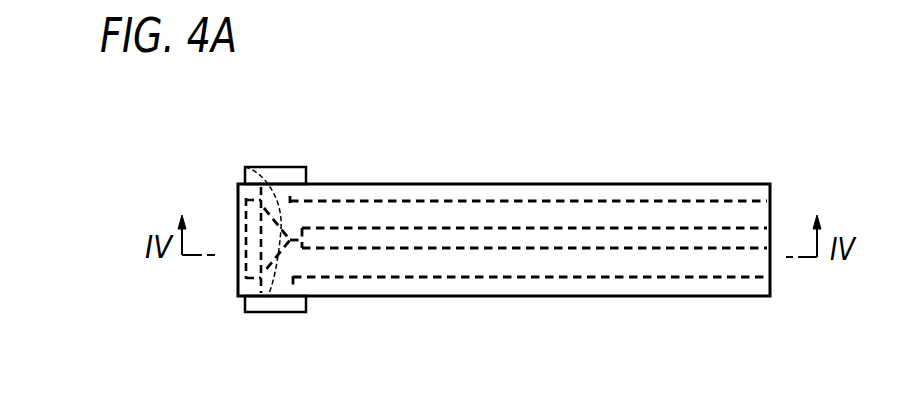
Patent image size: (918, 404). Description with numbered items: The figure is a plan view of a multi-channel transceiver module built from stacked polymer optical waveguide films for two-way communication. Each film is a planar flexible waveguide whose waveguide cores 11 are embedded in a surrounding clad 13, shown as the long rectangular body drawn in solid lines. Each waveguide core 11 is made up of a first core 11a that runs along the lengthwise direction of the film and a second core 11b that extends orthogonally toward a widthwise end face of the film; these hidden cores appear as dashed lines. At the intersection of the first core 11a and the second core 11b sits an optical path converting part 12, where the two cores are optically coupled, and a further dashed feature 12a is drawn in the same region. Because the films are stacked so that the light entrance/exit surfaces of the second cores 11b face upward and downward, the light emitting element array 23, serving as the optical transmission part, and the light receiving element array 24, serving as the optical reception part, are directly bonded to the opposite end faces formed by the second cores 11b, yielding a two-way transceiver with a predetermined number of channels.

The waveguide core 11 is at (515, 222).
The first core 11a is at (362, 223).
The second core 11b is at (291, 195).
The optical path converting part 12 is at (265, 240).
The curved portion 12a is at (245, 167).
The clad 13 is at (618, 292).
The light emitting element array 23 is at (278, 167).
The light receiving element array 24 is at (285, 303).